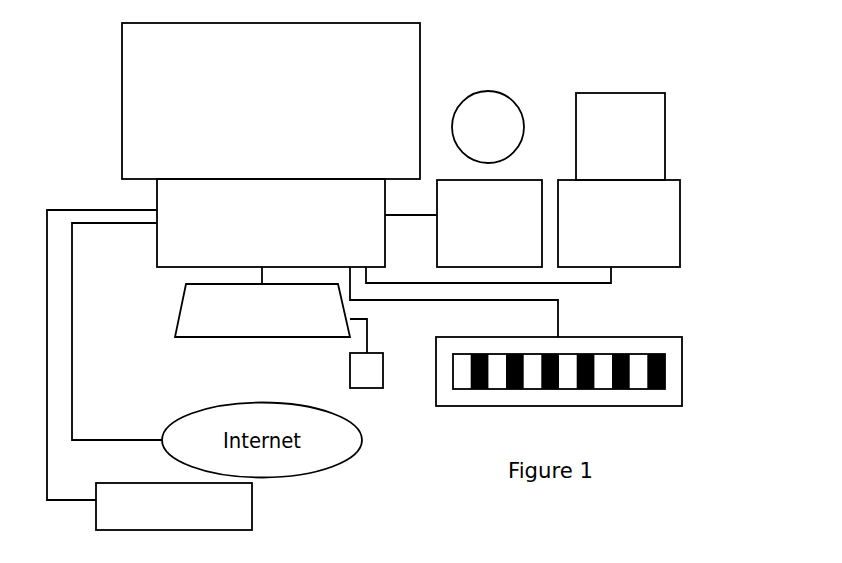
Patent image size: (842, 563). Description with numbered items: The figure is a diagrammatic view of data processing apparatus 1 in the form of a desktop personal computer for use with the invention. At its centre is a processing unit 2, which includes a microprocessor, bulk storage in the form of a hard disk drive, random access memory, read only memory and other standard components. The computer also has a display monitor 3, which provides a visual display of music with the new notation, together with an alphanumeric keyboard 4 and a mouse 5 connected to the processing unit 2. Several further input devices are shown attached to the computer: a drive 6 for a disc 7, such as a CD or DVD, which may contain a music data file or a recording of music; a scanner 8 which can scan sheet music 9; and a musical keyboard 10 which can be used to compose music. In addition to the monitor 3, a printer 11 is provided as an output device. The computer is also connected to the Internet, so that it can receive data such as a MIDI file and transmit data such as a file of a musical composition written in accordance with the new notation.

The data processing apparatus 1 is at (128, 284).
The processing unit 2 is at (175, 197).
The display monitor 3 is at (193, 92).
The alphanumeric keyboard 4 is at (245, 318).
The mouse 5 is at (368, 369).
The drive 6 is at (486, 225).
The disc 7 is at (488, 92).
The scanner 8 is at (680, 214).
The sheet music 9 is at (645, 127).
The musical keyboard 10 is at (665, 370).
The printer 11 is at (235, 506).